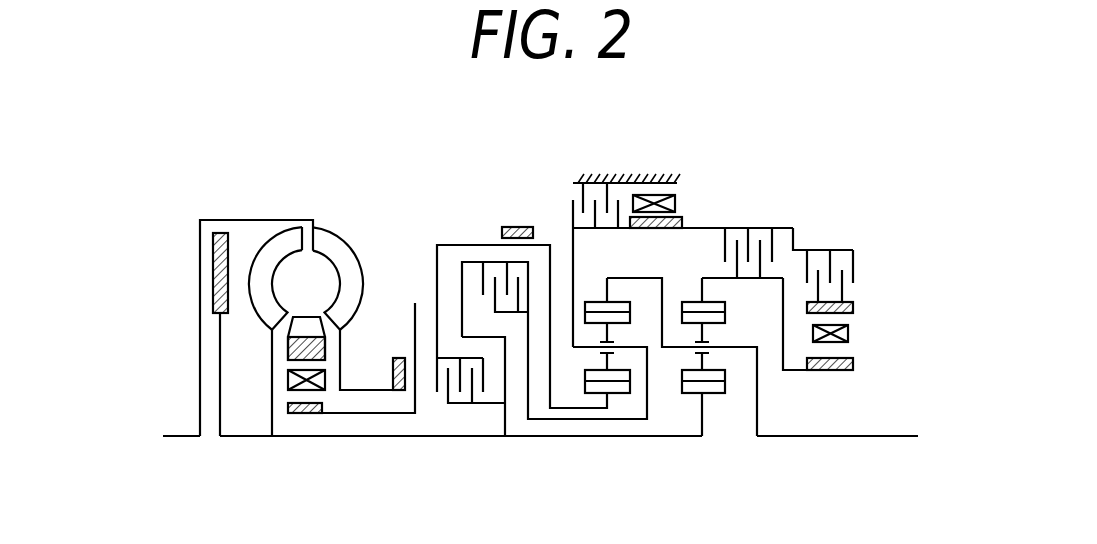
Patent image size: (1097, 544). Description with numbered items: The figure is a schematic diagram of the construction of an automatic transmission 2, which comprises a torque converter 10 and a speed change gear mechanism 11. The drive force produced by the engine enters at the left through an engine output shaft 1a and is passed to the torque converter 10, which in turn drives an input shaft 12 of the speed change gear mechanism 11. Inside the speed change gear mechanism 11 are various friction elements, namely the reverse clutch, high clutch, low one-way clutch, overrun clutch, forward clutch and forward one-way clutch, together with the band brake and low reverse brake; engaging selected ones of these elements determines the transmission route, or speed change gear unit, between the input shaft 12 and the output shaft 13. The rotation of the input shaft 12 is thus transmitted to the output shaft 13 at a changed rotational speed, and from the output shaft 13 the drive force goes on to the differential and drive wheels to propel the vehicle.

The torque converter 10 is at (257, 220).
The speed change gear mechanism 11 is at (841, 157).
The input shaft 12 is at (370, 436).
The output shaft 13 is at (846, 436).
The engine output shaft 1a is at (175, 436).
The automatic transmission 2 is at (480, 452).